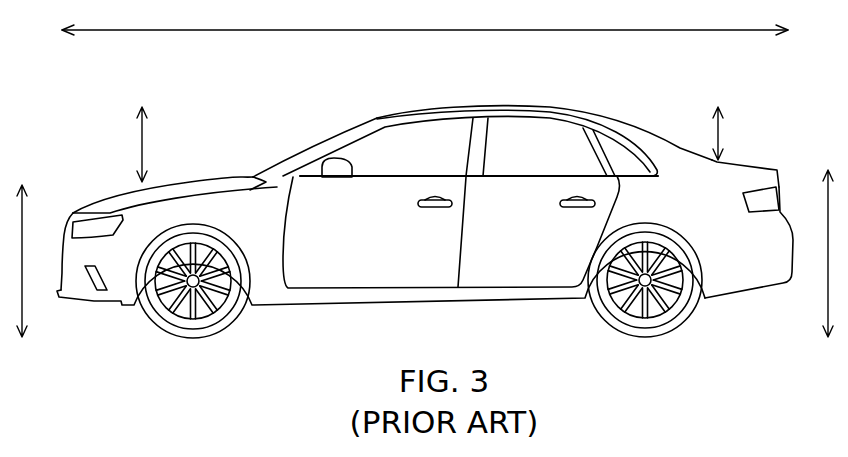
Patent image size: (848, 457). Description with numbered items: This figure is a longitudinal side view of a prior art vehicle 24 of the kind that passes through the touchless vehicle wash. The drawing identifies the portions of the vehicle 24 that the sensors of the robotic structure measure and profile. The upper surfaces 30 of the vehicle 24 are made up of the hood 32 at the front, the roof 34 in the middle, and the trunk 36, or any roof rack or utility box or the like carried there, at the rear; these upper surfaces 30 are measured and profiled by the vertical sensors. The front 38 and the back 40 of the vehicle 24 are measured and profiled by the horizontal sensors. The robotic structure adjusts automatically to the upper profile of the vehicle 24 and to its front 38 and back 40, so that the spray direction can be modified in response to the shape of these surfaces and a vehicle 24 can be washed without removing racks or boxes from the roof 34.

The vehicle 24 is at (155, 355).
The upper surfaces of the vehicle 30 is at (450, 96).
The hood 32 is at (211, 177).
The roof 34 is at (558, 108).
The trunk 36 is at (757, 166).
The front of the vehicle 38 is at (63, 242).
The back of the vehicle 40 is at (794, 220).